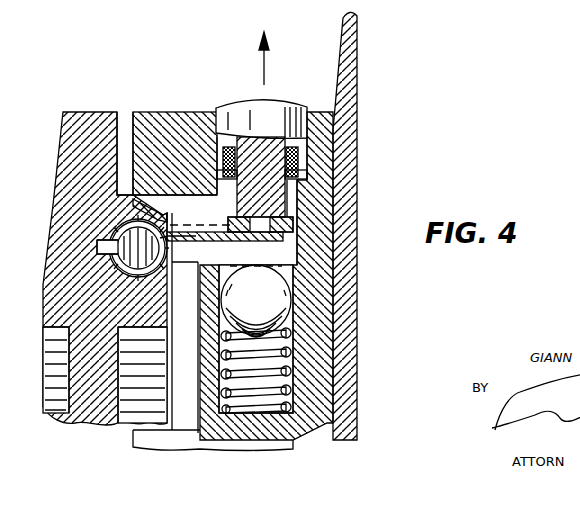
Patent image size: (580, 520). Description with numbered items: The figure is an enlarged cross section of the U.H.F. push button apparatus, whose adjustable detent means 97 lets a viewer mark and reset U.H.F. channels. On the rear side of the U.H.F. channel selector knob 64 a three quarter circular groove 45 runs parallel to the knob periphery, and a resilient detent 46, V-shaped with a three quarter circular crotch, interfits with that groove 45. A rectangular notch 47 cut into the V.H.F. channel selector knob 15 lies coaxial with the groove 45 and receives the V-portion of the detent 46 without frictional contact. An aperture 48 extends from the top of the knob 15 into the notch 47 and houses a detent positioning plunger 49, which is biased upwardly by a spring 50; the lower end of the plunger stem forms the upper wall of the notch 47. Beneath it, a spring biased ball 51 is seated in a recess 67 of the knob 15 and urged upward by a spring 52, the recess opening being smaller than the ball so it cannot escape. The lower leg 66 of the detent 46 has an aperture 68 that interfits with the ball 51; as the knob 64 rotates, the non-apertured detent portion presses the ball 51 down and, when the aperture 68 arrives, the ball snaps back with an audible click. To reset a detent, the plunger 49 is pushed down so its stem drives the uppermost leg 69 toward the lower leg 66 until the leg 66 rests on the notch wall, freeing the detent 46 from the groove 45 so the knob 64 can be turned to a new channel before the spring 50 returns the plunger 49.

The V.H.F. channel selector knob 15 is at (324, 120).
The three quarter circular groove 45 is at (162, 216).
The resilient detent 46 is at (133, 248).
The rectangular notch 47 is at (287, 247).
The aperture 48 is at (197, 186).
The detent positioning plunger 49 is at (240, 107).
The spring 50 is at (224, 148).
The spring biased ball 51 is at (245, 294).
The spring 52 is at (220, 342).
The U.H.F. channel selector knob 64 is at (62, 178).
The lower leg 66 is at (192, 259).
The recess 67 is at (228, 362).
The aperture 68 is at (239, 267).
The uppermost leg 69 is at (200, 242).
The adjustable detent means 97 is at (136, 108).